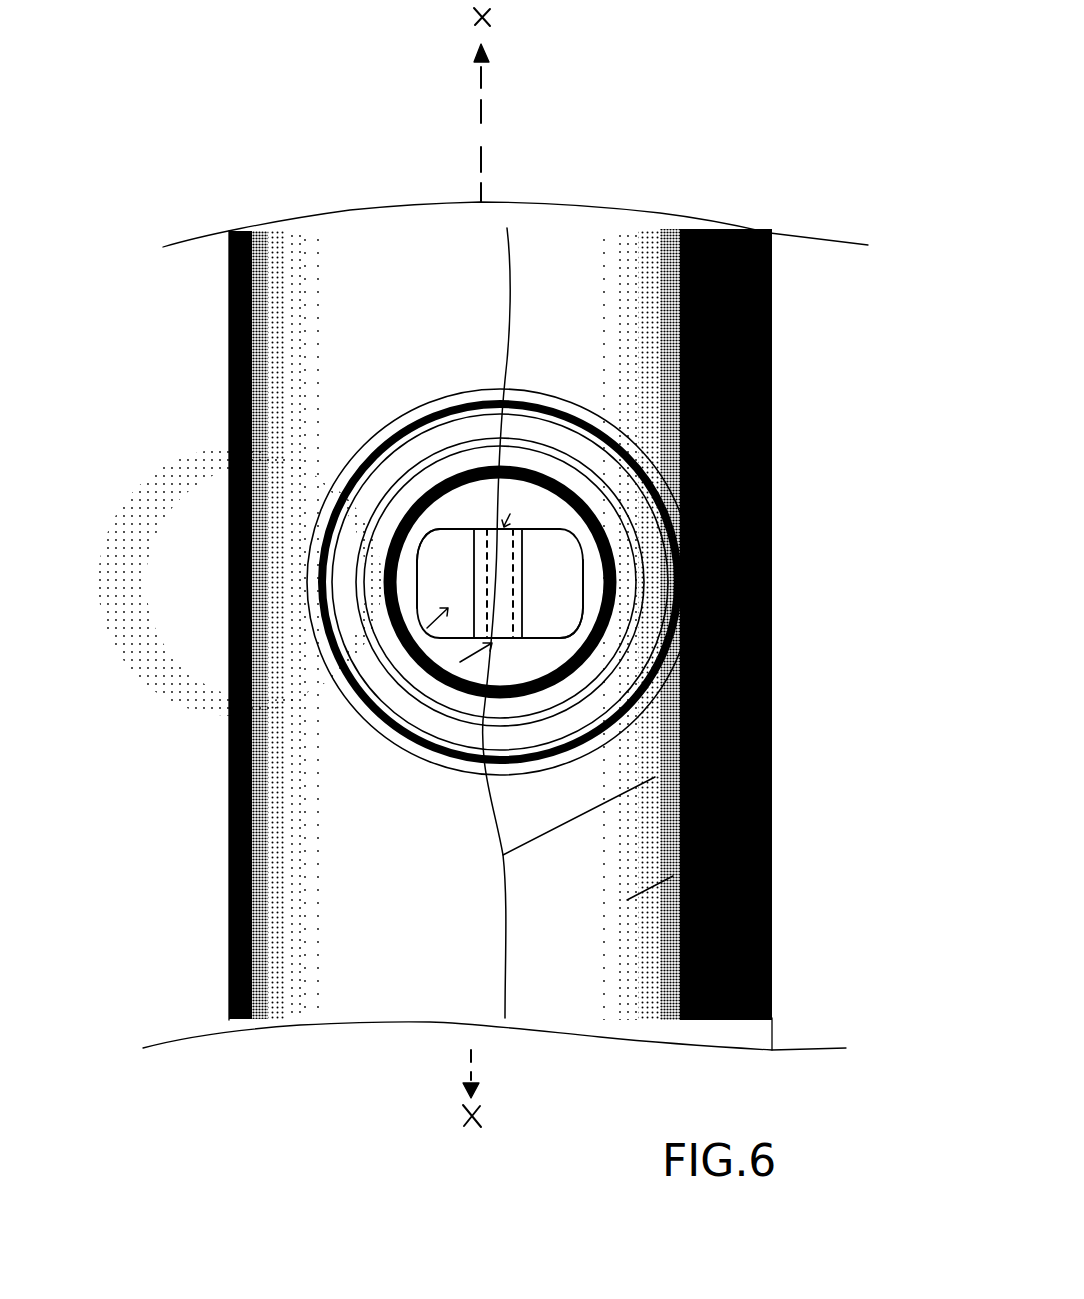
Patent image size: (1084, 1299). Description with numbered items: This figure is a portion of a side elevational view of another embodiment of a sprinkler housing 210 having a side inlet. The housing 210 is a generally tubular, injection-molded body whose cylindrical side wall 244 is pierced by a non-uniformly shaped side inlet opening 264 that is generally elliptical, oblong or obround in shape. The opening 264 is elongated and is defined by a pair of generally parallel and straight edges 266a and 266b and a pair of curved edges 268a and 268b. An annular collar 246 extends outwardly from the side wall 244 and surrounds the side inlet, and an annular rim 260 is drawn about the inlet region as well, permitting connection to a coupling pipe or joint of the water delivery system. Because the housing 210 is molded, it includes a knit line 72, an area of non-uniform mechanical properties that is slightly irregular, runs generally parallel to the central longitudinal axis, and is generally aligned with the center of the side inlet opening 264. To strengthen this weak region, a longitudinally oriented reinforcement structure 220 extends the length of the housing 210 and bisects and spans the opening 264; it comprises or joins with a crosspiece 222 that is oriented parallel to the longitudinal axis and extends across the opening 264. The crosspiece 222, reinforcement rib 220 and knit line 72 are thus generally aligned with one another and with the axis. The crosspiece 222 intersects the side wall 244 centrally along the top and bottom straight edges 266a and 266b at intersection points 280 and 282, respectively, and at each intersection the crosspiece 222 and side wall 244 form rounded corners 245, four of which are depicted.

The sprinkler housing 210 is at (193, 832).
The reinforcement structure 220 is at (525, 569).
The crosspiece 222 is at (522, 593).
The side wall 244 is at (772, 828).
The rounded corner 245 is at (471, 545).
The annular collar 246 is at (383, 482).
The annular rim 260 is at (535, 502).
The side inlet opening 264 is at (410, 642).
The straight edge 266a is at (453, 527).
The straight edge 266b is at (526, 645).
The curved edge 268a is at (583, 567).
The curved edge 268b is at (417, 571).
The knit line 72 is at (772, 732).
The intersection point 280 is at (520, 510).
The intersection point 282 is at (459, 636).